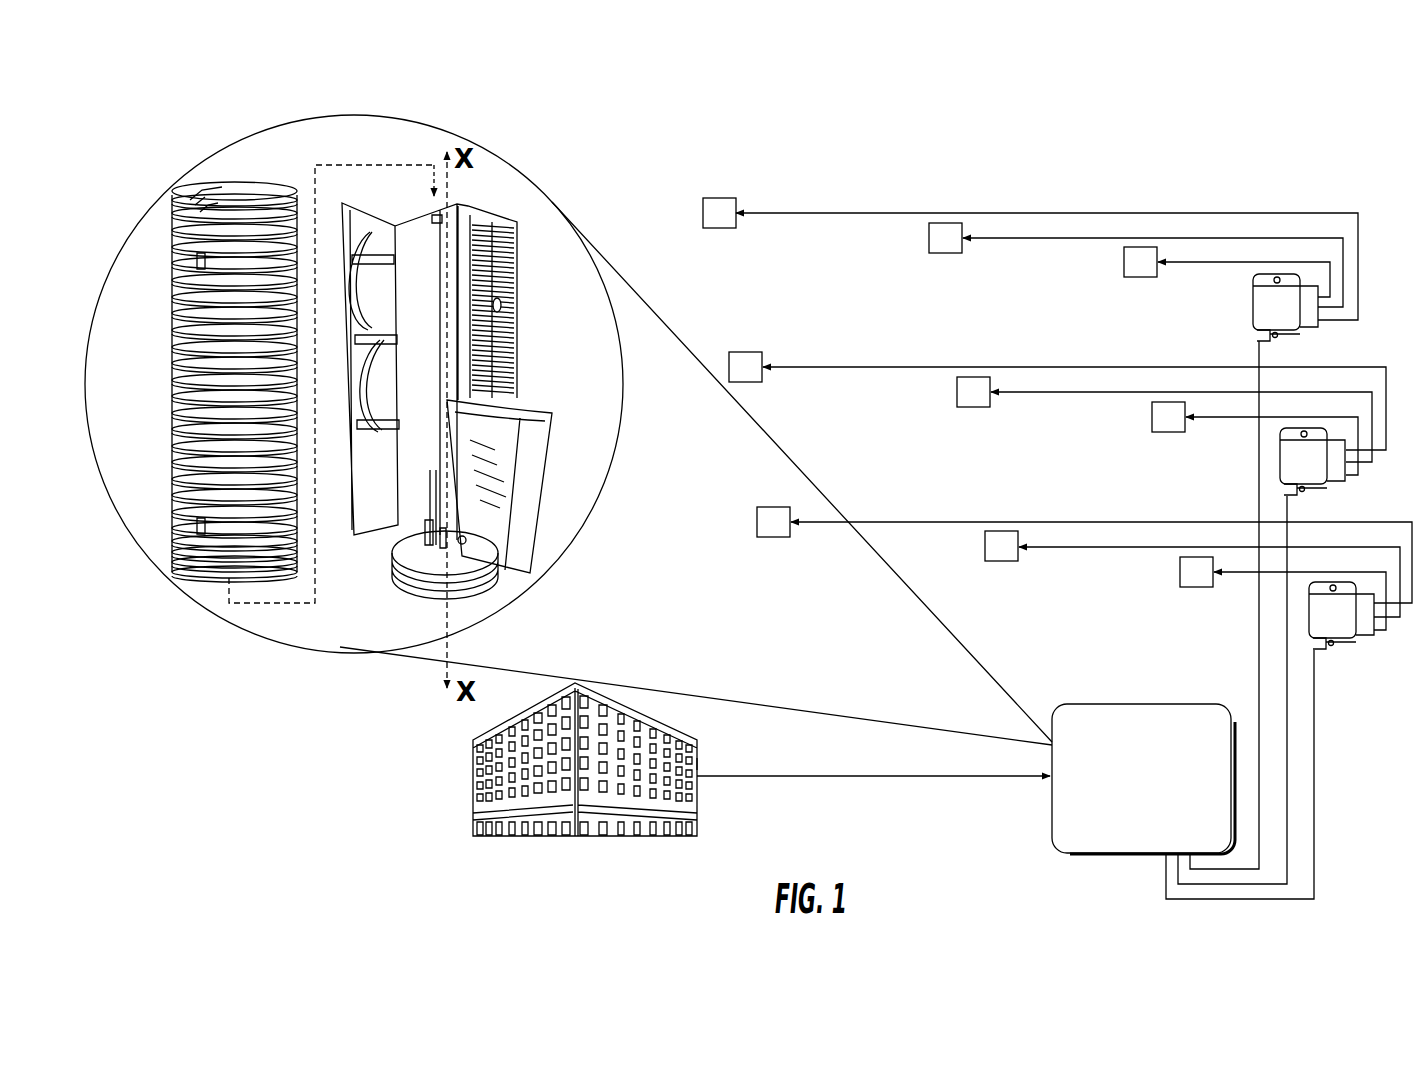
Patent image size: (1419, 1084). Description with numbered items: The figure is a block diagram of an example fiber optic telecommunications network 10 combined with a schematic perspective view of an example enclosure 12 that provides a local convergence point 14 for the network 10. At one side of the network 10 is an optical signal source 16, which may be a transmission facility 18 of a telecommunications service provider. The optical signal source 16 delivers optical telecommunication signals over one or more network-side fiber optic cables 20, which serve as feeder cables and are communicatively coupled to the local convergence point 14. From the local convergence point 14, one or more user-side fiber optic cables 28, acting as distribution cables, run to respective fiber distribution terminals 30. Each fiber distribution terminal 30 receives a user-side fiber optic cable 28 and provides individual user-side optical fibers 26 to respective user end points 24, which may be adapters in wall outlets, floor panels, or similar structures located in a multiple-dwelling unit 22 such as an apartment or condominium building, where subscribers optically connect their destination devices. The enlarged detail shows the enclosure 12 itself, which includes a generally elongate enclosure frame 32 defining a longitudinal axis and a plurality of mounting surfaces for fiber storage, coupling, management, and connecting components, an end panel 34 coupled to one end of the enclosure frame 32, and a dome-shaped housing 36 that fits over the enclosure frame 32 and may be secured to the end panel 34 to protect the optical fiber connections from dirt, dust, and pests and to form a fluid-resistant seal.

The fiber optic telecommunications network 10 is at (684, 140).
The enclosure 12 is at (374, 158).
The local convergence point 14 is at (1108, 853).
The optical signal source 16 is at (653, 708).
The transmission facility 18 is at (697, 764).
The network-side fiber optic cables 20 is at (820, 778).
The multiple-dwelling unit 22 is at (1245, 173).
The user end points 24 is at (720, 202).
The user-side optical fibers 26 is at (867, 213).
The user-side fiber optic cables 28 is at (1259, 686).
The fiber distribution terminals 30 is at (1288, 320).
The enclosure frame 32 is at (478, 207).
The end panel 34 is at (452, 563).
The dome-shaped housing 36 is at (247, 187).